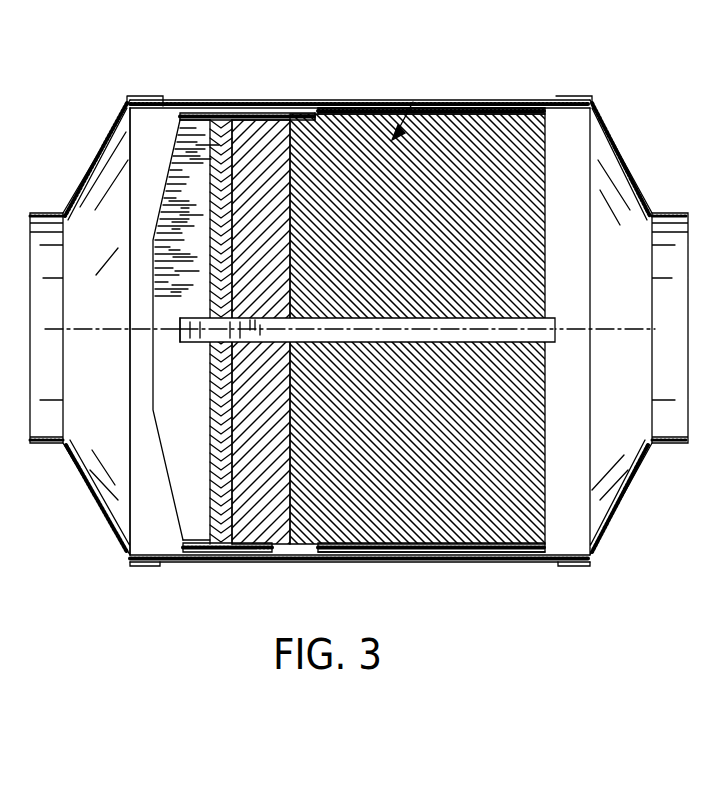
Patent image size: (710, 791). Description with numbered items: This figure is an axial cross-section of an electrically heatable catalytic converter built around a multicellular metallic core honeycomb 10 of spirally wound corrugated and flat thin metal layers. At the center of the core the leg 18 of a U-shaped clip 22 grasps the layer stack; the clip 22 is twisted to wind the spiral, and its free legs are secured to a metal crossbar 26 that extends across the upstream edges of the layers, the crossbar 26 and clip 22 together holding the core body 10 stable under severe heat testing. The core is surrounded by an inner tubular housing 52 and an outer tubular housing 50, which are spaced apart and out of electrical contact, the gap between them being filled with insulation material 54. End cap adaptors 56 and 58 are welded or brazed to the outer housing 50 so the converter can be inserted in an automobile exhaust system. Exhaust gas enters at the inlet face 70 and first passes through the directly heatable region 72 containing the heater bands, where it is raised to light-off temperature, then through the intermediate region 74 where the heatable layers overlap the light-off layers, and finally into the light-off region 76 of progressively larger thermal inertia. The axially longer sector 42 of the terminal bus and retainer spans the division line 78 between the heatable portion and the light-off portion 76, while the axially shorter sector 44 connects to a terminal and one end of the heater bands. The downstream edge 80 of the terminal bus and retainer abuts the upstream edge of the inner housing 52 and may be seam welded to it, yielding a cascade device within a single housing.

The multicellular metallic core honeycomb 10 is at (413, 102).
The leg of U-shaped clip 18 is at (193, 341).
The U-shaped clip 22 is at (556, 322).
The metal crossbar 26 is at (180, 278).
The axially longer sector 42 is at (268, 112).
The axially shorter sector 44 is at (230, 554).
The outer tubular housing 50 is at (460, 100).
The inner tubular housing 52 is at (478, 108).
The insulation material 54 is at (350, 108).
The end cap adaptor 56 is at (92, 162).
The end cap adaptor 58 is at (625, 155).
The inlet face 70 is at (212, 433).
The directly electrically heatable region 72 is at (222, 170).
The intermediate indirectly electrically heatable region 74 is at (256, 207).
The light-off region 76 is at (505, 272).
The division line 78 is at (289, 165).
The downstream edge of terminal bus and retainer 80 is at (325, 110).